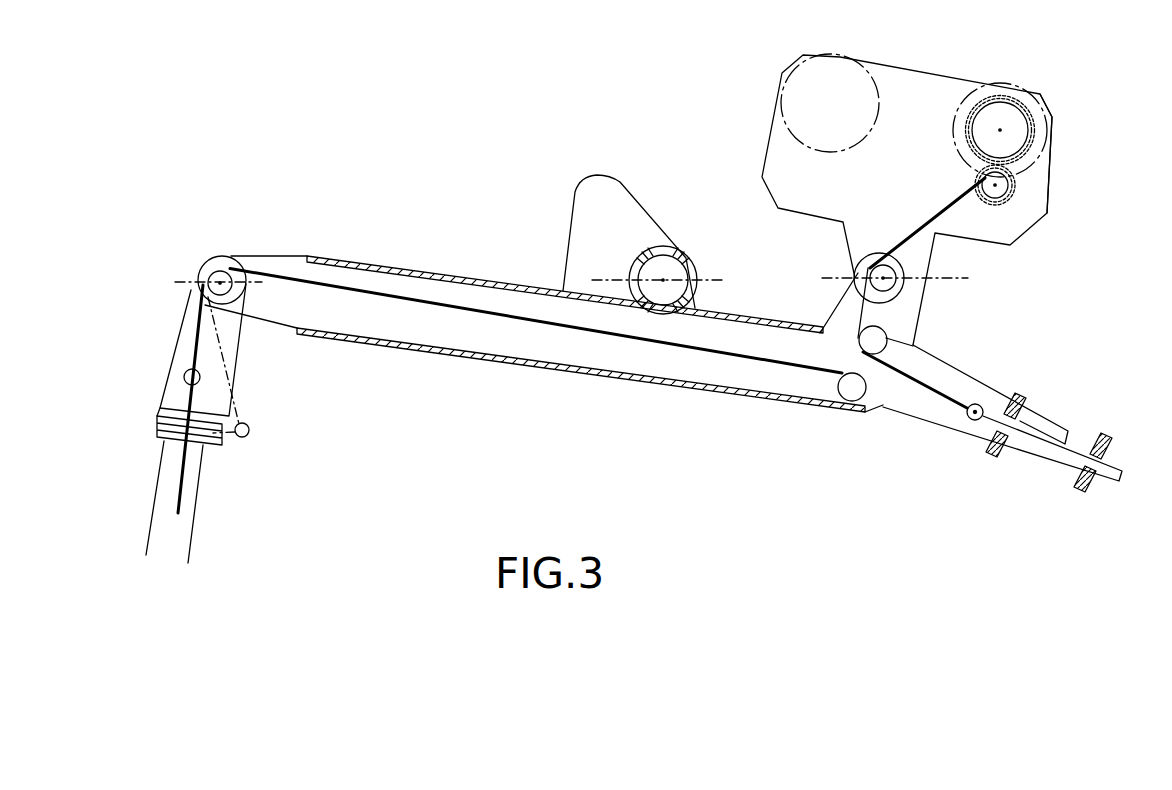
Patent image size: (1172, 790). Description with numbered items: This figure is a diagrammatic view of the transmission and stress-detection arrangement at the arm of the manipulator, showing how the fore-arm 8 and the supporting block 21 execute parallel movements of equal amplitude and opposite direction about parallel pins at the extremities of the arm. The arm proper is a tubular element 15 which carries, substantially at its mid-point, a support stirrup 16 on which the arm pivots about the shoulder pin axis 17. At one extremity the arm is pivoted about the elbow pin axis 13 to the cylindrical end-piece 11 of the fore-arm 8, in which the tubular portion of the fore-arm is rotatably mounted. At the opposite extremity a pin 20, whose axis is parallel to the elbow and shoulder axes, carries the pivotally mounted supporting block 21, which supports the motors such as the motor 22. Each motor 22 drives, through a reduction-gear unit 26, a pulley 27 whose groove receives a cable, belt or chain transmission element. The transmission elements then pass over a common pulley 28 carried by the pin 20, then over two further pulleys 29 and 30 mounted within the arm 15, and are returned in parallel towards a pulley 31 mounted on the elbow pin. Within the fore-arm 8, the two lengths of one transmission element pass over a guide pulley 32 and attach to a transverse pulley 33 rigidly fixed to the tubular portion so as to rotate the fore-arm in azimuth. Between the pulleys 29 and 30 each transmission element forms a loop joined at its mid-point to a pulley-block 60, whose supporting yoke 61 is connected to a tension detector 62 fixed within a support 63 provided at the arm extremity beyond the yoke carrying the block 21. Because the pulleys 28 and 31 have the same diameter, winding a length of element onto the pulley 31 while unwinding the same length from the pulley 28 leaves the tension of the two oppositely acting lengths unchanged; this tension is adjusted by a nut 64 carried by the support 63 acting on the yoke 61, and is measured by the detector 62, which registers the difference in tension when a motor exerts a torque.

The fore-arm 8 is at (198, 523).
The cylindrical end-piece 11 is at (230, 392).
The elbow pin axis 13 is at (232, 271).
The tubular element 15 is at (447, 270).
The support stirrup 16 is at (587, 222).
The shoulder pin axis 17 is at (666, 281).
The pin 20 is at (912, 290).
The supporting block 21 is at (811, 191).
The motor 22 is at (1043, 162).
The reduction-gear unit 26 is at (972, 104).
The pulley 27 is at (1008, 188).
The common pulley 28 is at (908, 271).
The pulley 29 is at (887, 338).
The pulley 30 is at (842, 392).
The pulley 31 is at (199, 268).
The guide pulley 32 is at (250, 430).
The transverse pulley 33 is at (216, 441).
The pulley-block 60 is at (968, 414).
The supporting yoke 61 is at (995, 440).
The tension detector 62 is at (1077, 455).
The support 63 is at (1018, 392).
The nut 64 is at (1042, 458).